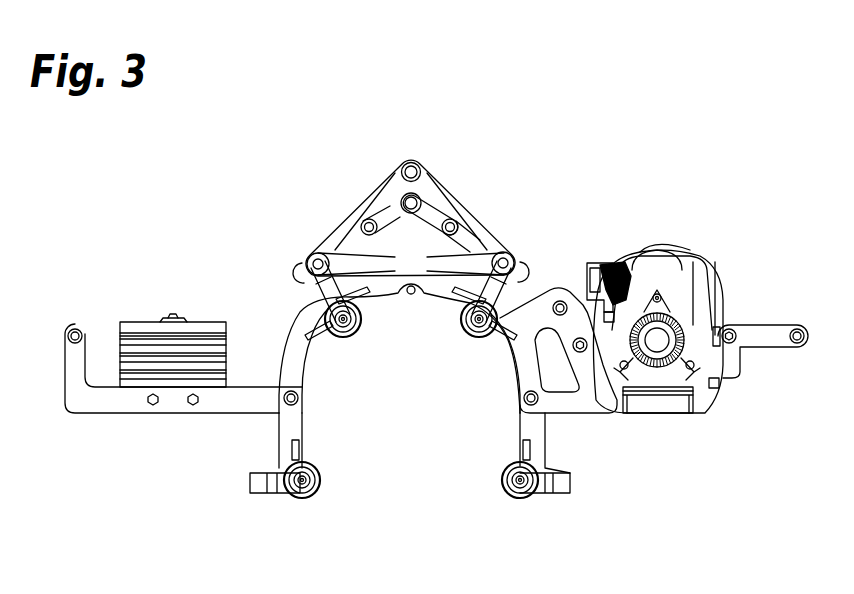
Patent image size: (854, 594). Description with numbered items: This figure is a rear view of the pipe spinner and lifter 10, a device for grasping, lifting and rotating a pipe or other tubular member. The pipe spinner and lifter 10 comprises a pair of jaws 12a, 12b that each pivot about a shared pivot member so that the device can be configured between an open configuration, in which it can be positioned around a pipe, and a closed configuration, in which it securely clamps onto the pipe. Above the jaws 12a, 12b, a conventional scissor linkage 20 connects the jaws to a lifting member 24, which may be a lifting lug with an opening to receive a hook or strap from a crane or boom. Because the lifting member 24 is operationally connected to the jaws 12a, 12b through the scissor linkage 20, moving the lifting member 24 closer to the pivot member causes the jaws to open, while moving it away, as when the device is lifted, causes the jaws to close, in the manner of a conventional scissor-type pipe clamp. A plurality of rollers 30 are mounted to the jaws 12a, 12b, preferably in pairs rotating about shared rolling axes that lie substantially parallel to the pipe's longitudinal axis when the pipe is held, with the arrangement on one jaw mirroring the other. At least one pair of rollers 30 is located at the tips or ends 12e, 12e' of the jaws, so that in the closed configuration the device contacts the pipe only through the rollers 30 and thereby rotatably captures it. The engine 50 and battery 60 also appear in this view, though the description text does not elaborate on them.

The pipe spinner and lifter 10 is at (565, 63).
The jaw 12a is at (584, 442).
The jaw 12b is at (240, 443).
The jaw end 12e is at (593, 506).
The jaw end 12e' is at (239, 505).
The scissor linkage 20 is at (327, 220).
The lifting member 24 is at (405, 157).
The rollers 30 is at (352, 341).
The engine 50 is at (697, 252).
The battery 60 is at (164, 288).